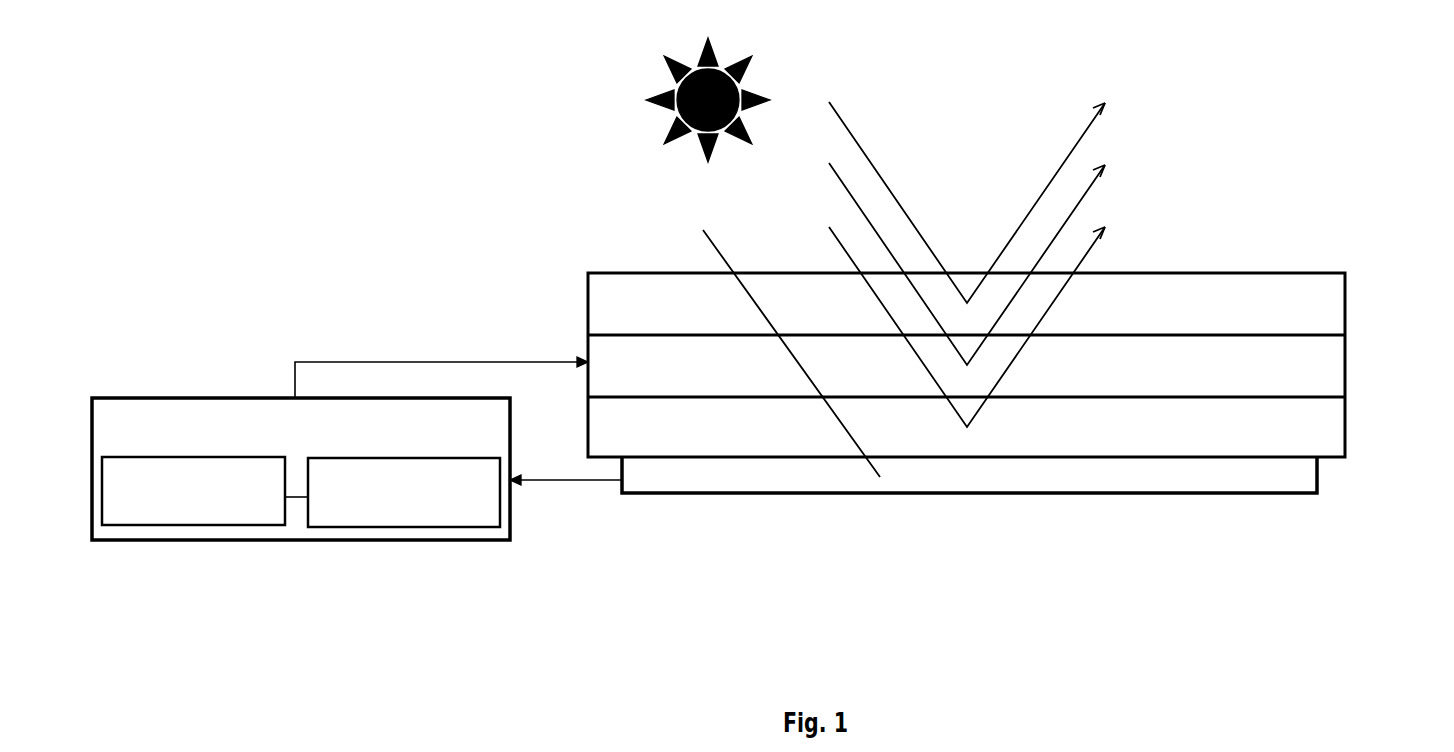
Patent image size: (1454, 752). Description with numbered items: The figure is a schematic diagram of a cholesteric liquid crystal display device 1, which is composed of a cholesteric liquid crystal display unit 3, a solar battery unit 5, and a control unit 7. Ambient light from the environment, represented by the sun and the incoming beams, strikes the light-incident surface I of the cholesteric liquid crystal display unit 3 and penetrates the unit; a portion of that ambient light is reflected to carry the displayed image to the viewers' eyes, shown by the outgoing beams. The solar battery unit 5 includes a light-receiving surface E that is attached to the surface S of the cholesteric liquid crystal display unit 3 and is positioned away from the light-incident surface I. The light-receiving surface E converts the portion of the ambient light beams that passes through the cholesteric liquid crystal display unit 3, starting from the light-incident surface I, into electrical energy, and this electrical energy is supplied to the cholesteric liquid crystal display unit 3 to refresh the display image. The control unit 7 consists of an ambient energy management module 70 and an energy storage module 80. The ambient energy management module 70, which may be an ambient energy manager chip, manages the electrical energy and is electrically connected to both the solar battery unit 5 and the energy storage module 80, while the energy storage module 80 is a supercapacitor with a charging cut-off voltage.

The cholesteric liquid crystal display device 1 is at (265, 106).
The cholesteric liquid crystal display unit 3 is at (1345, 282).
The solar battery unit 5 is at (1320, 480).
The control unit 7 is at (145, 425).
The ambient energy management module 70 is at (227, 525).
The energy storage module 80 is at (388, 527).
The surface of the cholesteric liquid crystal display unit S is at (1085, 457).
The light-incident surface I is at (1280, 273).
The light-receiving surface E is at (1263, 460).